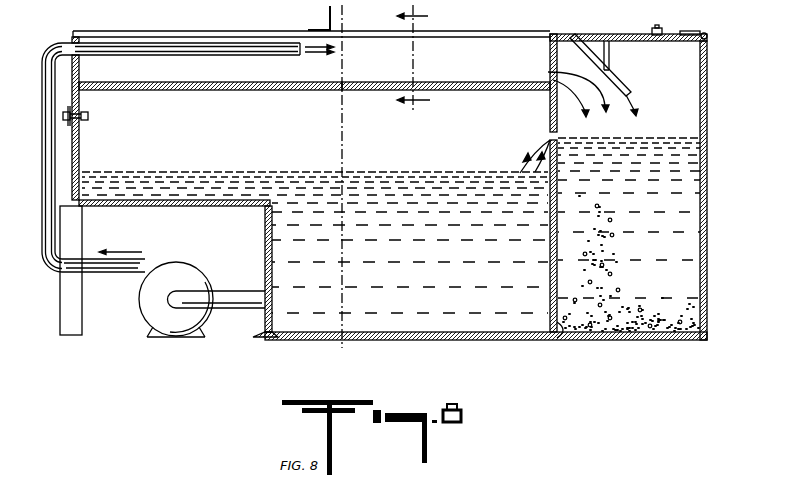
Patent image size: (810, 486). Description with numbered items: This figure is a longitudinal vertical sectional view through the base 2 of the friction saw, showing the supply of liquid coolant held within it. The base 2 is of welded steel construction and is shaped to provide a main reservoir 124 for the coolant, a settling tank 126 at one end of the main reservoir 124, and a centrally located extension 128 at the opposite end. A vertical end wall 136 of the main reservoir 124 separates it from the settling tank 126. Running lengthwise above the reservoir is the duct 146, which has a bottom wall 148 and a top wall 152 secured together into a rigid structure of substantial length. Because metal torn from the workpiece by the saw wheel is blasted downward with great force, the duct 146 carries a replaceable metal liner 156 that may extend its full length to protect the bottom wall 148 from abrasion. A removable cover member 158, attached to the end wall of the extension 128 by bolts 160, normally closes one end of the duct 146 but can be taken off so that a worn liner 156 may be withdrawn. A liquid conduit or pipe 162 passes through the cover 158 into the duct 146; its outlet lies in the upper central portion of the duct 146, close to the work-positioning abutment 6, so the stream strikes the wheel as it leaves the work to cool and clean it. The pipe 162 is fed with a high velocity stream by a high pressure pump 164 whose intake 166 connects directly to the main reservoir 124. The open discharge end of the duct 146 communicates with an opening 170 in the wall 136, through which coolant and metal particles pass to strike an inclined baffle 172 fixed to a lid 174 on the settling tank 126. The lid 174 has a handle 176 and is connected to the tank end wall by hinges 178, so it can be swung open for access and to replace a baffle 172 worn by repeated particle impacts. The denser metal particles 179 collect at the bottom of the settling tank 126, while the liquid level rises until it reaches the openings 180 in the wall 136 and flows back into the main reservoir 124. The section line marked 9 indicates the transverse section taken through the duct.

The top wall 152 is at (140, 20).
The duct 146 is at (467, 35).
The removable cover member 158 is at (70, 71).
The liquid conduit or pipe 162 is at (203, 56).
The replaceable metal liner 156 is at (167, 73).
The bottom wall 148 is at (280, 91).
The bolts 160 is at (90, 112).
The centrally located extension 128 is at (104, 207).
The base 2 is at (261, 227).
The main reservoir 124 is at (442, 325).
The high pressure pump 164 is at (146, 319).
The intake 166 is at (257, 291).
The opening 170 is at (550, 51).
The lid or closure 174 is at (636, 34).
The handle 176 is at (660, 26).
The hinges 178 is at (708, 31).
The settling tank 126 is at (709, 219).
The inclined baffle 172 is at (624, 89).
The openings 180 is at (548, 136).
The vertical end wall 136 is at (560, 340).
The metal particles 179 is at (629, 340).
The rigid abutment 6 is at (331, 8).
The section line 9 is at (413, 58).